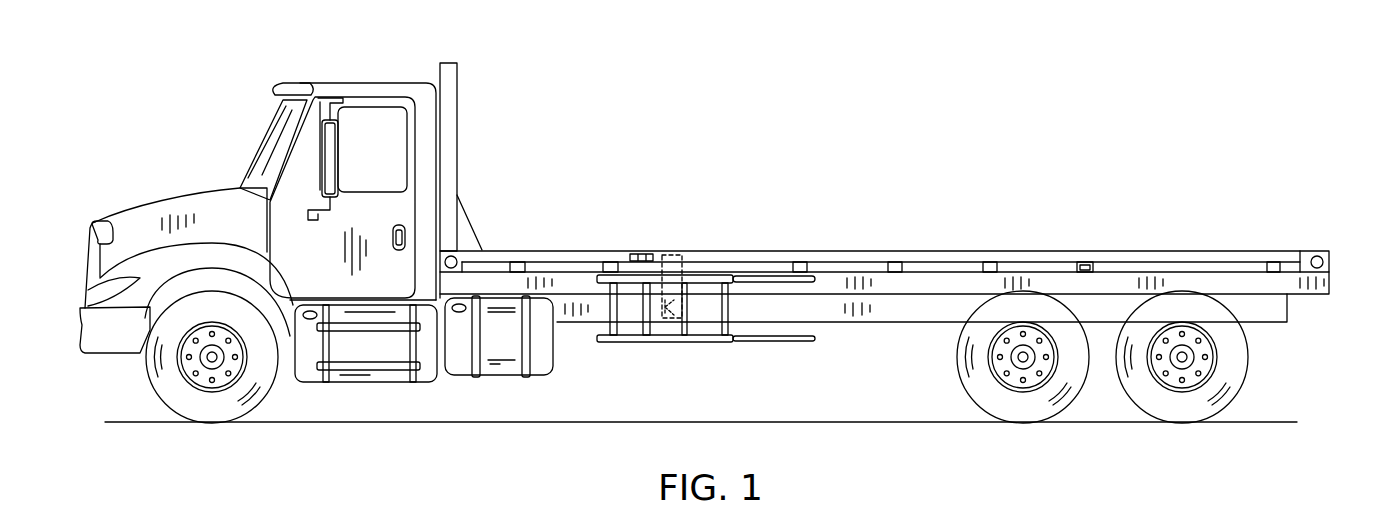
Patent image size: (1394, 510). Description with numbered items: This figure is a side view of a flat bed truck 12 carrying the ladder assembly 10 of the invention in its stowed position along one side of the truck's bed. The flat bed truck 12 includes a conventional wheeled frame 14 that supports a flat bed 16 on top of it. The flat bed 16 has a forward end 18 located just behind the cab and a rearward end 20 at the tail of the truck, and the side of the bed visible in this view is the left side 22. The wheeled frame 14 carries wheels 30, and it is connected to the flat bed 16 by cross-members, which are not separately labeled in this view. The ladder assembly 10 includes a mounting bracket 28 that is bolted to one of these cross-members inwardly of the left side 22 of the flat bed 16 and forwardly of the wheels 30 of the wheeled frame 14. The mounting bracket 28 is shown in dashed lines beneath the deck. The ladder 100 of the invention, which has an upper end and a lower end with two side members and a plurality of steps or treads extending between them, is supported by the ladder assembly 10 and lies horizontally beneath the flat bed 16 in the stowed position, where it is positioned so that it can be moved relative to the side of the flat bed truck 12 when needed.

The ladder assembly 10 is at (668, 348).
The flat bed truck 12 is at (358, 80).
The wheeled frame 14 is at (892, 323).
The flat bed 16 is at (874, 250).
The forward end 18 is at (444, 251).
The rearward end 20 is at (1342, 255).
The left side 22 is at (985, 251).
The mounting bracket 28 is at (672, 282).
The wheels 30 is at (1043, 412).
The ladder 100 is at (781, 346).